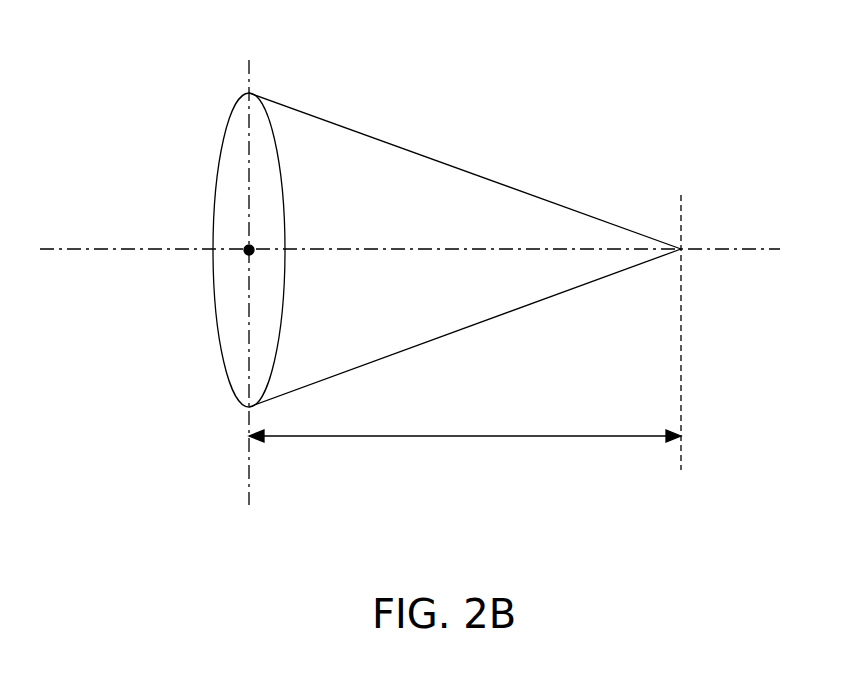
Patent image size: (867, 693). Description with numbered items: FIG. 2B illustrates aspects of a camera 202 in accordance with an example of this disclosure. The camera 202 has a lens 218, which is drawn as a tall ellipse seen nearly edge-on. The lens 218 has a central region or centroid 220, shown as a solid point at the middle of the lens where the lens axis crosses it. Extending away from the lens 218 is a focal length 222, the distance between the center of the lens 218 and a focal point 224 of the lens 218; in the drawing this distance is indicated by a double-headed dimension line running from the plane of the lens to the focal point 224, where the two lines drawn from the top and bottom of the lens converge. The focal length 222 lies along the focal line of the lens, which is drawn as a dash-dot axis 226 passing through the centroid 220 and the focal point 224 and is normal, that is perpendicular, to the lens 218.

The camera 202 is at (250, 37).
The lens 218 is at (262, 109).
The central region or centroid 220 is at (231, 253).
The focal length 222 is at (466, 437).
The focal point 224 is at (686, 249).
The optical axis 226 is at (103, 249).